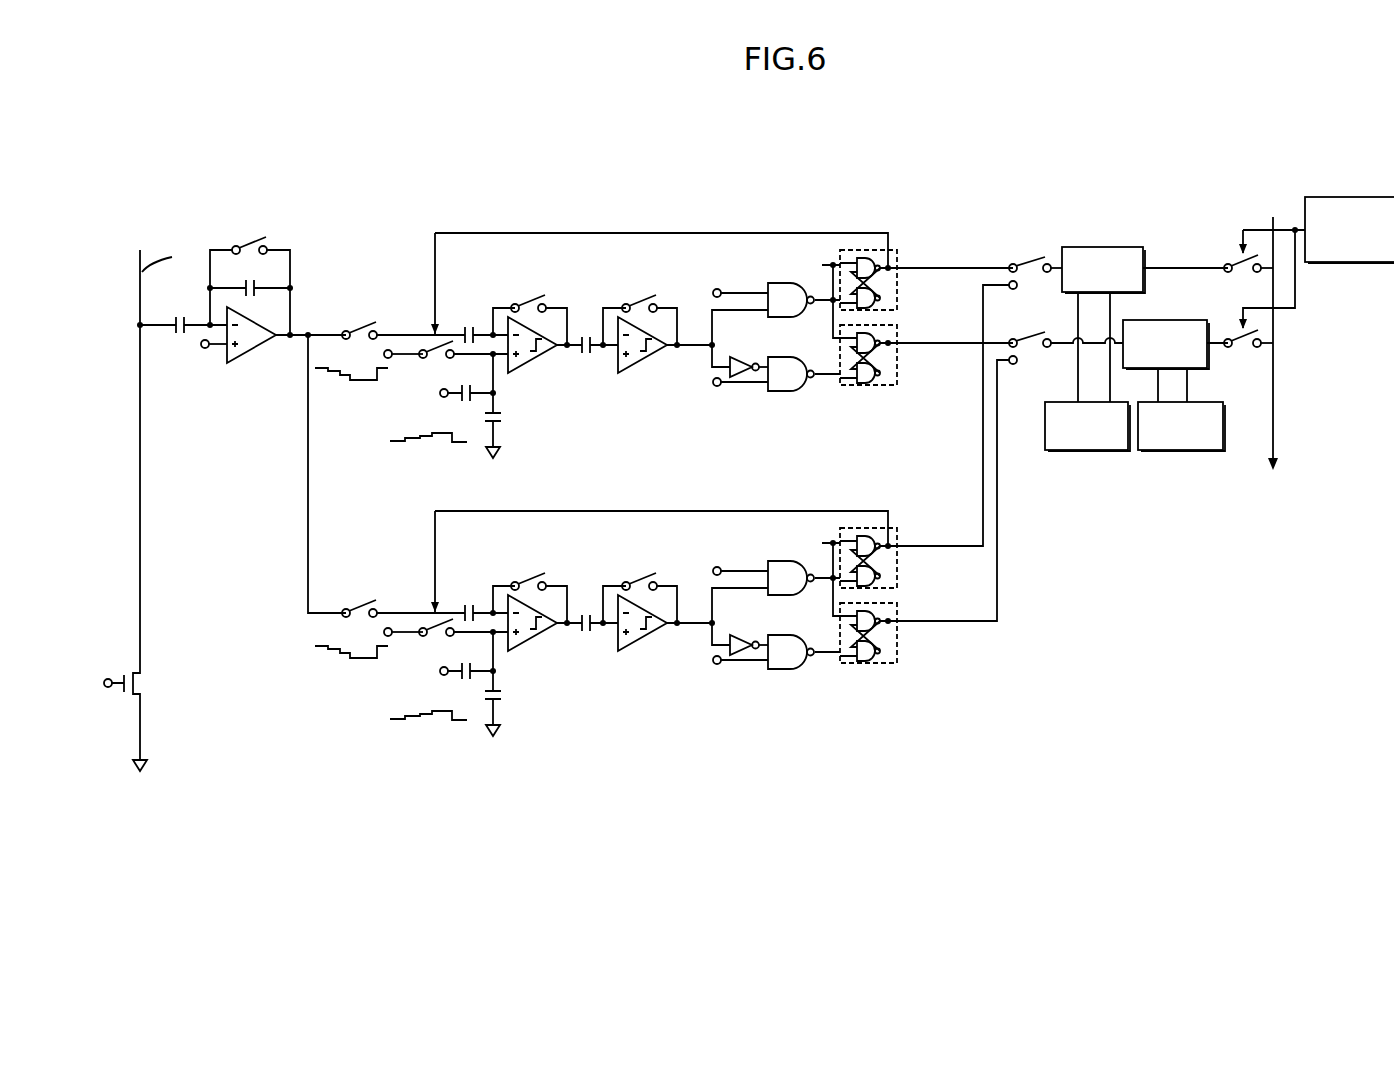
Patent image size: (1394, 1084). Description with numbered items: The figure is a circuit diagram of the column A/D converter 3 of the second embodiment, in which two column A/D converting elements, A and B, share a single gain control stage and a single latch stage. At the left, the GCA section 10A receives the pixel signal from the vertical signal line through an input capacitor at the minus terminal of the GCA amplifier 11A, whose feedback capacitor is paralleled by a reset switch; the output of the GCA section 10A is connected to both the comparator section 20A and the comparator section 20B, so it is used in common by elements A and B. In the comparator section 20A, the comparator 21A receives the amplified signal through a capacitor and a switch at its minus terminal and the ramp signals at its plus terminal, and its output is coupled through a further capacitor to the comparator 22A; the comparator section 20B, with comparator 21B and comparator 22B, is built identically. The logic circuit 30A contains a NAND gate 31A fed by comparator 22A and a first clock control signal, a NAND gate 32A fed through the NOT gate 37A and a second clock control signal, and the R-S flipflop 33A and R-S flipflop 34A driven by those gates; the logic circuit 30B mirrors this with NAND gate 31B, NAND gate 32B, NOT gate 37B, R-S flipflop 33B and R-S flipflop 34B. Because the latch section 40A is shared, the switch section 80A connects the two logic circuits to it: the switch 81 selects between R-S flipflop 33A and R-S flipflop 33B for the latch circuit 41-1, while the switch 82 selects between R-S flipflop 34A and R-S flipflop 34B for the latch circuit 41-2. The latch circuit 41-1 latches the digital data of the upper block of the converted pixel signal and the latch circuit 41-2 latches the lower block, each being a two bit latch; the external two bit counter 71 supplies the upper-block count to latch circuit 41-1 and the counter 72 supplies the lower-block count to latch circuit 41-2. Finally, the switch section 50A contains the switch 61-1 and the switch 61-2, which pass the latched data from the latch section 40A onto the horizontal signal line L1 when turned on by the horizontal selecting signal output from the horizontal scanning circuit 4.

The column A/D converter 3 is at (723, 116).
The horizontal scanning circuit 4 is at (1358, 197).
The GCA section 10A is at (155, 182).
The comparator section 20A is at (703, 182).
The logic circuit 30A is at (925, 182).
The comparator section 20B is at (703, 805).
The logic circuit 30B is at (925, 805).
The switch section 80A is at (1060, 182).
The latch section 40A is at (1065, 182).
The switch section 50A is at (1212, 182).
The GCA amplifier 11A is at (245, 365).
The comparator 21A is at (530, 370).
The comparator 22A is at (640, 373).
The NAND gate 31A is at (780, 318).
The NAND gate 32A is at (780, 393).
The R-S flipflop 33A is at (893, 250).
The R-S flipflop 34A is at (885, 385).
The NOT gate 37A is at (742, 355).
The comparator 21B is at (530, 648).
The comparator 22B is at (640, 651).
The NAND gate 31B is at (780, 596).
The NAND gate 32B is at (780, 671).
The R-S flipflop 33B is at (893, 528).
The R-S flipflop 34B is at (885, 663).
The NOT gate 37B is at (742, 633).
The latch circuit 41-1 is at (1075, 247).
The latch circuit 41-2 is at (1160, 320).
The switch 61-1 is at (1232, 258).
The switch 61-2 is at (1242, 348).
The counter 71 is at (1095, 452).
The counter 72 is at (1180, 452).
The switch 81 is at (1035, 286).
The switch 82 is at (1066, 361).
The horizontal signal line L1 is at (1275, 420).